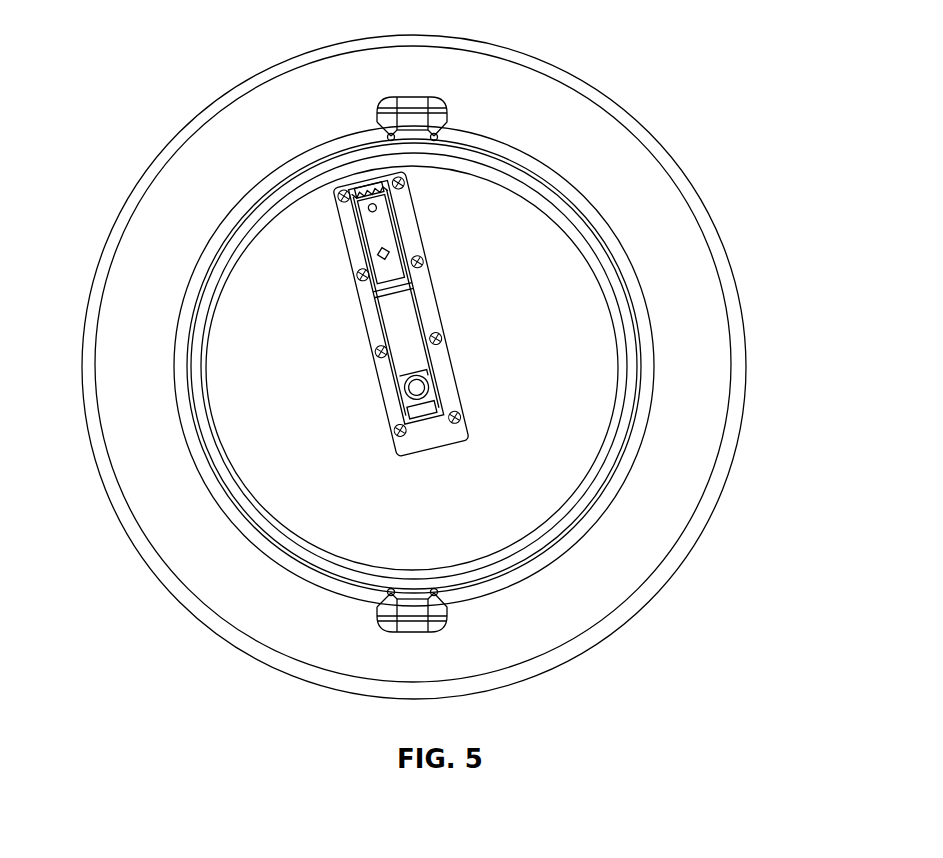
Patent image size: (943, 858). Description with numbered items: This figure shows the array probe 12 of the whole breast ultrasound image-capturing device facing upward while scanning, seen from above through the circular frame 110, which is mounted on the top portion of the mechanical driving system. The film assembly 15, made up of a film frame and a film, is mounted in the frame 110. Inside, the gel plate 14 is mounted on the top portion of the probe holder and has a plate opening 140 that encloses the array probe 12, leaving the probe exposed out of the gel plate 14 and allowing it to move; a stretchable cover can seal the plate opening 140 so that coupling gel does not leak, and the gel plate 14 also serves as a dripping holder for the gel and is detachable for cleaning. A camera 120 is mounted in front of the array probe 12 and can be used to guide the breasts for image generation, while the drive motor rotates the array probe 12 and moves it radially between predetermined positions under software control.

The array probe 12 is at (398, 320).
The gel plate 14 is at (518, 230).
The film assembly 15 is at (605, 502).
The frame 110 is at (203, 547).
The camera 120 is at (445, 387).
The plate opening 140 is at (406, 197).